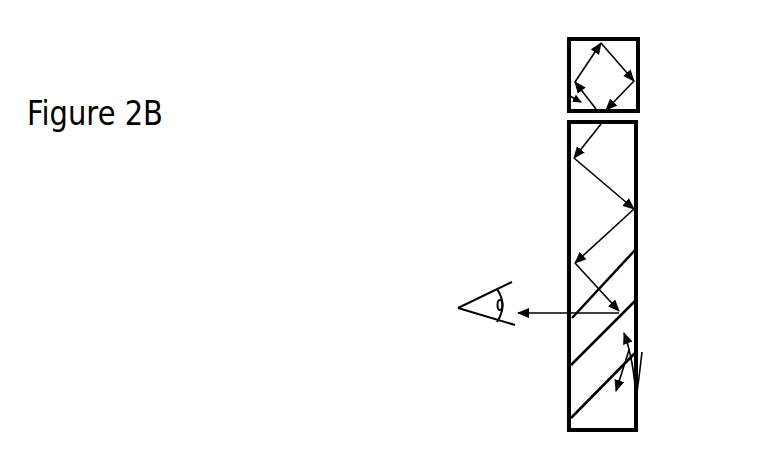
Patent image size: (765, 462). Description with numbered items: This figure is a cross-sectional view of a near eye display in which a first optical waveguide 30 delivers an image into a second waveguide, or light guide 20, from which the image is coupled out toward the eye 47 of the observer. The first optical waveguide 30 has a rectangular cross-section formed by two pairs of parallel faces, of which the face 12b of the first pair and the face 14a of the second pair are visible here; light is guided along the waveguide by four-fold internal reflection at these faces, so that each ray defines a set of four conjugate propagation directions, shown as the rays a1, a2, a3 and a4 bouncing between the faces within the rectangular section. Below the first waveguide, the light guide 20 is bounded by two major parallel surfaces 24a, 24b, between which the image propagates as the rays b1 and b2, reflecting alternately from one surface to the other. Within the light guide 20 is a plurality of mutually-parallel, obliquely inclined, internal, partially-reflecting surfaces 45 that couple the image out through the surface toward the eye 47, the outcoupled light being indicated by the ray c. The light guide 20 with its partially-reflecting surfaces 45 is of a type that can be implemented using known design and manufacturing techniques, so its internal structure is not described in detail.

The first optical waveguide 30 is at (591, 63).
The face of second pair of parallel faces 14a is at (562, 62).
The face of first pair of parallel faces 12b is at (568, 95).
The major parallel surface 24a is at (562, 205).
The major parallel surface 24b is at (644, 258).
The second waveguide (light guide) 20 is at (603, 338).
The partially-reflecting surfaces 45 is at (641, 356).
The eye 47 is at (486, 312).
The ray a1 is at (593, 94).
The ray a2 is at (591, 62).
The ray a3 is at (621, 61).
The ray a4 is at (624, 98).
The ray b1 is at (604, 193).
The ray b2 is at (603, 234).
The light ray c is at (568, 300).